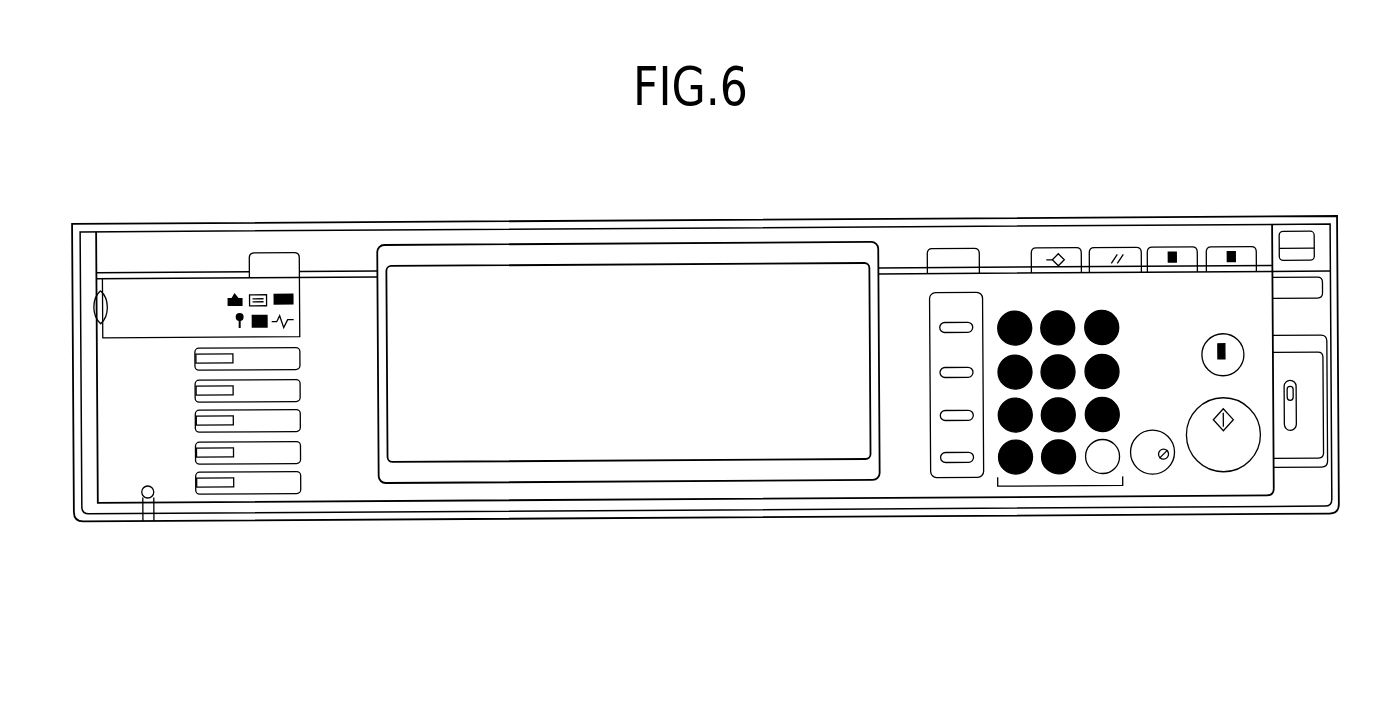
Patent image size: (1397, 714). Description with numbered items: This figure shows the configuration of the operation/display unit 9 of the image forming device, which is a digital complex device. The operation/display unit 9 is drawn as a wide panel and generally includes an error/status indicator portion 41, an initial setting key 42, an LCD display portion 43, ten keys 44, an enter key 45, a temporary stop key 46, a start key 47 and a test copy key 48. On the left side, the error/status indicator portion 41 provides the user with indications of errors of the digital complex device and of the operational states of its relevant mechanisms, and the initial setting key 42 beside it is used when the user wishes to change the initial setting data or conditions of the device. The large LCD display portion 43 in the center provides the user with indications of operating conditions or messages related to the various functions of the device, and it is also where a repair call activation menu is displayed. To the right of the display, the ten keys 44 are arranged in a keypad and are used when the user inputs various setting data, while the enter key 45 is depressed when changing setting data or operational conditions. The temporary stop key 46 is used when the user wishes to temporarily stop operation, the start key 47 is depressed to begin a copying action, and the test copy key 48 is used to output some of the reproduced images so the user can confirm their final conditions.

The operation/display unit 9 is at (774, 161).
The error/status indicator portion 41 is at (208, 295).
The initial setting key 42 is at (275, 260).
The LCD display portion 43 is at (508, 264).
The ten keys 44 is at (1058, 488).
The enter key 45 is at (1102, 474).
The temporary stop key 46 is at (1151, 462).
The start key 47 is at (1224, 456).
The test copy key 48 is at (1235, 354).